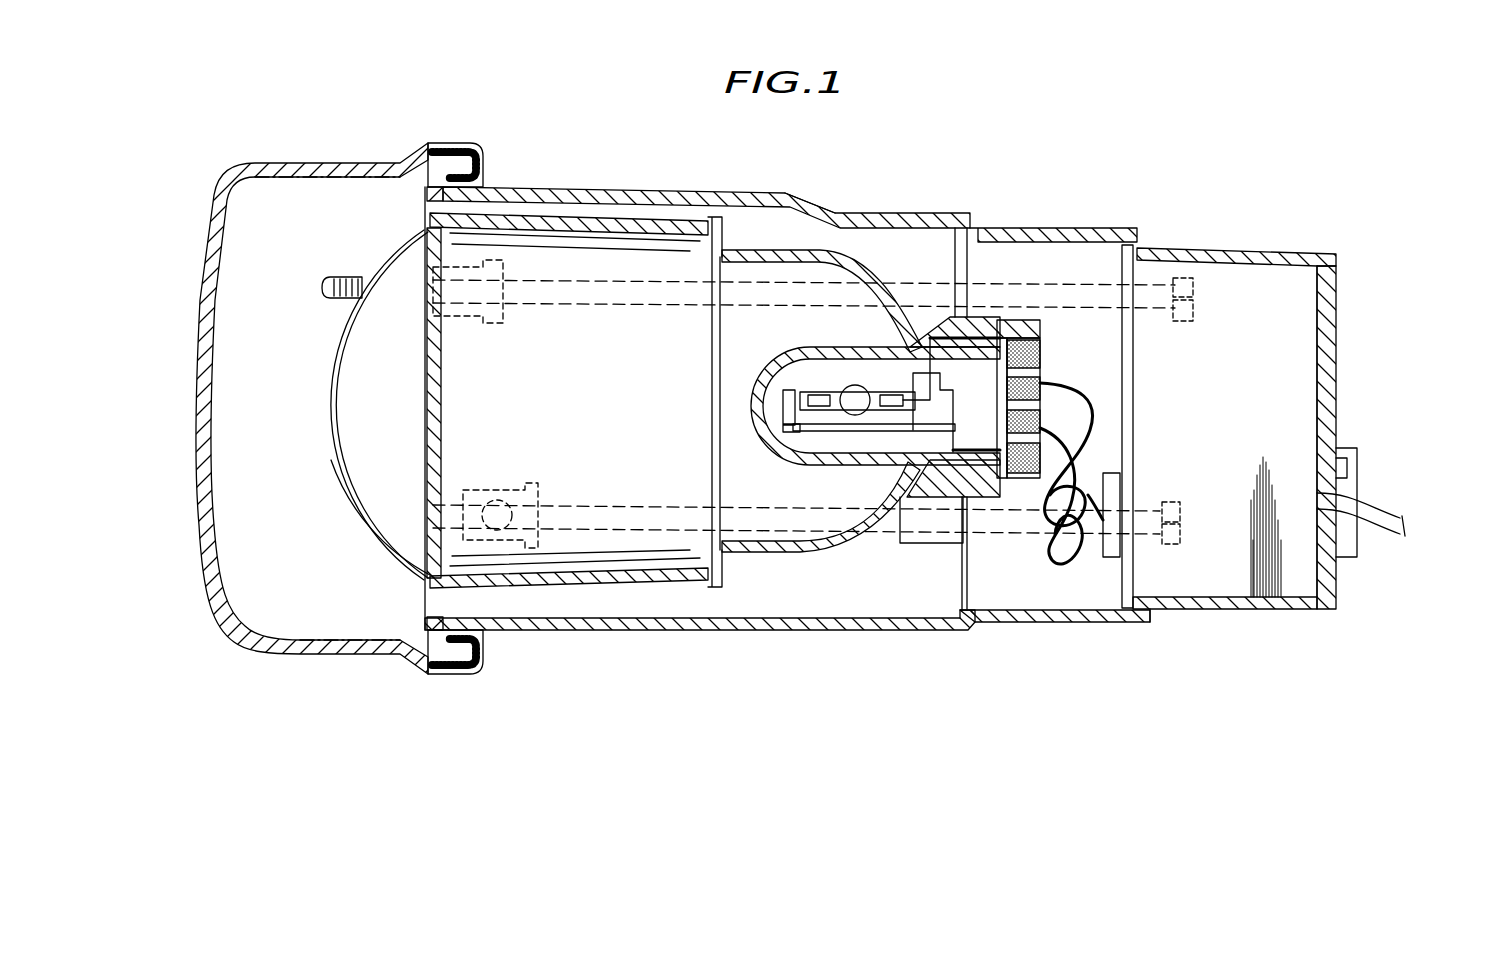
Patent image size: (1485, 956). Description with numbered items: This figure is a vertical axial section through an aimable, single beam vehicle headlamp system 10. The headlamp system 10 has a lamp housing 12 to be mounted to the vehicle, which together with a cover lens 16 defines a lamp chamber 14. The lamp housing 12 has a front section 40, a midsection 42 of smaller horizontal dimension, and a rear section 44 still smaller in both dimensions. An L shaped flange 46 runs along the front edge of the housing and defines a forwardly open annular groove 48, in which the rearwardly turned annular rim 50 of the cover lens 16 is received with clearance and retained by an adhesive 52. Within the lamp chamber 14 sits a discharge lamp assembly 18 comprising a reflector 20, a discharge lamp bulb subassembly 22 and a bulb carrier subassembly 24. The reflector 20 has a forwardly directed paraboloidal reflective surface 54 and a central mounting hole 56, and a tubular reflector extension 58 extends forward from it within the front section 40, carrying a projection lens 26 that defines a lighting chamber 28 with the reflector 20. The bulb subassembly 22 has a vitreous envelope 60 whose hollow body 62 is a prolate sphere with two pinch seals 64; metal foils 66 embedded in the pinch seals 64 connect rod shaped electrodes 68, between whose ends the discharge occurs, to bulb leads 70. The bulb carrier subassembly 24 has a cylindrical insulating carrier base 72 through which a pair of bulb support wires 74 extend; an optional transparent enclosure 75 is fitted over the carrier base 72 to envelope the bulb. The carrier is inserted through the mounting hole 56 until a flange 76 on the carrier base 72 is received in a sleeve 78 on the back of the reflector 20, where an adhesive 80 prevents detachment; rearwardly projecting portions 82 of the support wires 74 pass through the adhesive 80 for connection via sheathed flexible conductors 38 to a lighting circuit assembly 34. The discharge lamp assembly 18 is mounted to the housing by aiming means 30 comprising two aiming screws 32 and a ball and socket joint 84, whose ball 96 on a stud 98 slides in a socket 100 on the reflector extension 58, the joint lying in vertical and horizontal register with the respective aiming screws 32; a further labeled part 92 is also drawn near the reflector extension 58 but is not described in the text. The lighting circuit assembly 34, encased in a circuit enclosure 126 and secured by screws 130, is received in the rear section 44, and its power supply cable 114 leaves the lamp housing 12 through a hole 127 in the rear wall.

The headlamp system 10 is at (305, 92).
The lamp housing 12 is at (1335, 235).
The lamp chamber 14 is at (292, 570).
The cover lens 16 is at (200, 382).
The discharge lamp assembly 18 is at (326, 455).
The reflector 20 is at (803, 262).
The discharge lamp bulb subassembly 22 is at (830, 372).
The bulb carrier subassembly 24 is at (940, 498).
The projection lens 26 is at (340, 352).
The lighting chamber 28 is at (641, 484).
The aiming means 30 is at (505, 312).
The aiming screws 32 is at (585, 305).
The lighting circuit assembly 34 is at (1270, 290).
The sheathed flexible conductors 38 is at (1120, 470).
The front section 40 is at (595, 191).
The midsection 42 is at (1090, 235).
The rear section 44 is at (1200, 252).
The L shaped flange 46 is at (478, 150).
The groove 48 is at (440, 150).
The annular rim 50 is at (330, 162).
The adhesive 52 is at (425, 190).
The reflective surface 54 is at (857, 277).
The mounting hole 56 is at (1000, 338).
The tubular reflector extension 58 is at (552, 226).
The bulb or envelope 60 is at (850, 376).
The hollow body 62 is at (857, 388).
The pinch seals 64 is at (780, 442).
The metal foils 66 is at (912, 390).
The rod shaped electrodes 68 is at (803, 435).
The bulb leads 70 is at (945, 360).
The carrier base 72 is at (988, 475).
The bulb support wires 74 is at (961, 317).
The transparent enclosure 75 is at (778, 417).
The flange 76 is at (1010, 320).
The sleeve 78 is at (1028, 330).
The adhesive 80 is at (1042, 352).
The rearwardly projecting portions 82 is at (1043, 380).
The ball and socket joint 84 is at (515, 486).
The mounting boss 92 is at (458, 318).
The ball 96 is at (494, 500).
The stud 98 is at (585, 505).
The socket 100 is at (472, 488).
The cable 114 is at (1379, 530).
The circuit enclosure 126 is at (1307, 344).
The hole 127 is at (1358, 468).
The screws 130 is at (1112, 402).